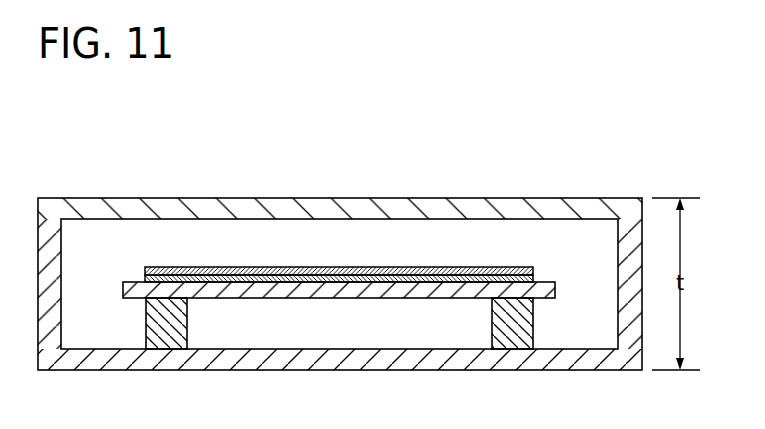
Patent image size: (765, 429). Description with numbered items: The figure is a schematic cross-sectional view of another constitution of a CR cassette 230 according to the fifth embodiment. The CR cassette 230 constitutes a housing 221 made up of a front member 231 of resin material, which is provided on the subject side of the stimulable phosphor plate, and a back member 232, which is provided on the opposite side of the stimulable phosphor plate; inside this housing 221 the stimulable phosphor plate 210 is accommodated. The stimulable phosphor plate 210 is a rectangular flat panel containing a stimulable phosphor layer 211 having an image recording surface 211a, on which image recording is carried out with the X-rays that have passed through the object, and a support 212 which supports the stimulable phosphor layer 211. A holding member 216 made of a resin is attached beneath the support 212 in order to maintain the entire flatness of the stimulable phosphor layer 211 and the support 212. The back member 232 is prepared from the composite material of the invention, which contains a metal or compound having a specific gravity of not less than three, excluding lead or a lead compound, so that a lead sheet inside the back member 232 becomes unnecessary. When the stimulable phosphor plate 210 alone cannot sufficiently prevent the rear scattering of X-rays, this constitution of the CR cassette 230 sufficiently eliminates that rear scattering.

The CR cassette 230 is at (91, 176).
The front member 231 is at (201, 207).
The housing 221 is at (632, 226).
The back member 232 is at (62, 358).
The stimulable phosphor plate 210 is at (120, 253).
The stimulable phosphor layer 211 is at (305, 268).
The image recording surface 211a is at (423, 268).
The support 212 is at (407, 292).
The holding member 216 is at (280, 292).